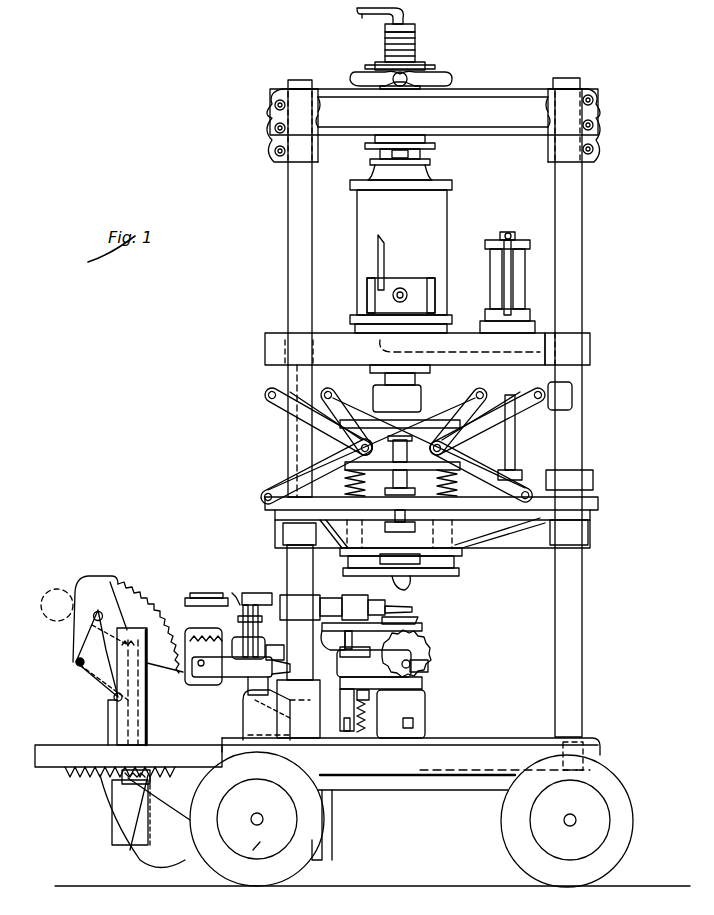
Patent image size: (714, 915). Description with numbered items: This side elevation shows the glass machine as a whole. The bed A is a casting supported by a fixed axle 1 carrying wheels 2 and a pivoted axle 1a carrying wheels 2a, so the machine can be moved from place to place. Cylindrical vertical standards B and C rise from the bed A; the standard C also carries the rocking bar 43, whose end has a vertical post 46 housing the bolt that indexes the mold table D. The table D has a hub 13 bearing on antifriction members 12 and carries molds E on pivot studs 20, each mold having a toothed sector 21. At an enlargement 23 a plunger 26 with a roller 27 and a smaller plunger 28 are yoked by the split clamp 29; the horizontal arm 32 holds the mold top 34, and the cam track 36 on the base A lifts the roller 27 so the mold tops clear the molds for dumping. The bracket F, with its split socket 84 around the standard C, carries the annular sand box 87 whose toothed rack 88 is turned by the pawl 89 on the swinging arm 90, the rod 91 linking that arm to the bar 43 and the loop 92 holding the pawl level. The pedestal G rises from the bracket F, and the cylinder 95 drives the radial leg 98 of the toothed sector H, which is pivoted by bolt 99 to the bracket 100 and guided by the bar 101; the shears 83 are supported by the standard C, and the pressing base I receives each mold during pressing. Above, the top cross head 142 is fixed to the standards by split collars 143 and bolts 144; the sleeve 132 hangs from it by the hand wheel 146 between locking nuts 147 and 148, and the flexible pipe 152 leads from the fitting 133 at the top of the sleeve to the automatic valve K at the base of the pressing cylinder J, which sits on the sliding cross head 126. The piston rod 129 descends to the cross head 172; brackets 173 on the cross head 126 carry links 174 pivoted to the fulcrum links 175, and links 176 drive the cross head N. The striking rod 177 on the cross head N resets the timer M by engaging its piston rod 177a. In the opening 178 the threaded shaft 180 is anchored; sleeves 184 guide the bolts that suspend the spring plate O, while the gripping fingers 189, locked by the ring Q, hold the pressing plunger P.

The flexible and extendible pipe 152 is at (366, 18).
The valve cap 133 is at (415, 22).
The sleeve 132 is at (415, 40).
The locking nut 147 is at (425, 64).
The threaded hand wheel 146 is at (408, 79).
The split collars 143 is at (585, 88).
The bolts 144 is at (272, 115).
The top cross head 142 is at (434, 125).
The locking nut 148 is at (430, 148).
The pressing cylinder J is at (447, 233).
The automatic valve K is at (401, 285).
The timer M is at (526, 293).
The vertical standard B is at (582, 272).
The antifriction members 12 is at (498, 314).
The rocking bar 43 is at (518, 314).
The cross head 126 is at (427, 349).
The brackets 173 is at (265, 375).
The piston rod 129 is at (420, 370).
The cross head 172 is at (397, 398).
The links 174 is at (290, 418).
The fulcrum links 175 is at (360, 424).
The links 176 is at (488, 422).
The striking rod 177 is at (527, 432).
The piston rod of the timer 177a is at (515, 432).
The transverse horizontal opening 178 is at (408, 448).
The threaded shaft 180 is at (265, 518).
The cross head N is at (432, 529).
The gripping fingers 189 is at (470, 543).
The cylindrical sleeves 184 is at (343, 568).
The ring Q is at (455, 558).
The spring plate O is at (430, 573).
The pressing plunger P is at (407, 586).
The shears 83 is at (388, 602).
The vertical standard C is at (287, 560).
The toothed sector H is at (125, 586).
The bar 101 is at (58, 605).
The radial leg 98 is at (92, 630).
The bolt 99 is at (76, 663).
The bracket 100 is at (113, 696).
The pedestal G is at (147, 715).
The mold top 34 is at (198, 592).
The cylindrical plunger 26 is at (240, 619).
The enlargement 23 is at (241, 675).
The smaller plunger 28 is at (244, 606).
The split clamp 29 is at (256, 598).
The mold table D is at (275, 656).
The cam track 36 is at (243, 712).
The molds E is at (422, 632).
The toothed sector 21 is at (425, 650).
The pivot studs 20 is at (413, 665).
The hub 13 is at (374, 663).
The horizontal arm 32 is at (420, 618).
The pressing base I is at (425, 712).
The roller 27 is at (347, 735).
The vertical cylindrical post 46 is at (366, 725).
The bed A is at (411, 764).
The split socket 84 is at (333, 840).
The annular sand box 87 is at (62, 745).
The toothed rack 88 is at (70, 778).
The bracket F is at (145, 821).
The pawl 89 is at (143, 840).
The swinging arm 90 is at (118, 838).
The rod 91 is at (186, 768).
The loop 92 is at (118, 790).
The fluid pressure cylinder 95 is at (112, 812).
The wheels 2a is at (257, 819).
The pivoted axle 1a is at (257, 819).
The wheels 2 is at (567, 821).
The fixed axle 1 is at (566, 823).